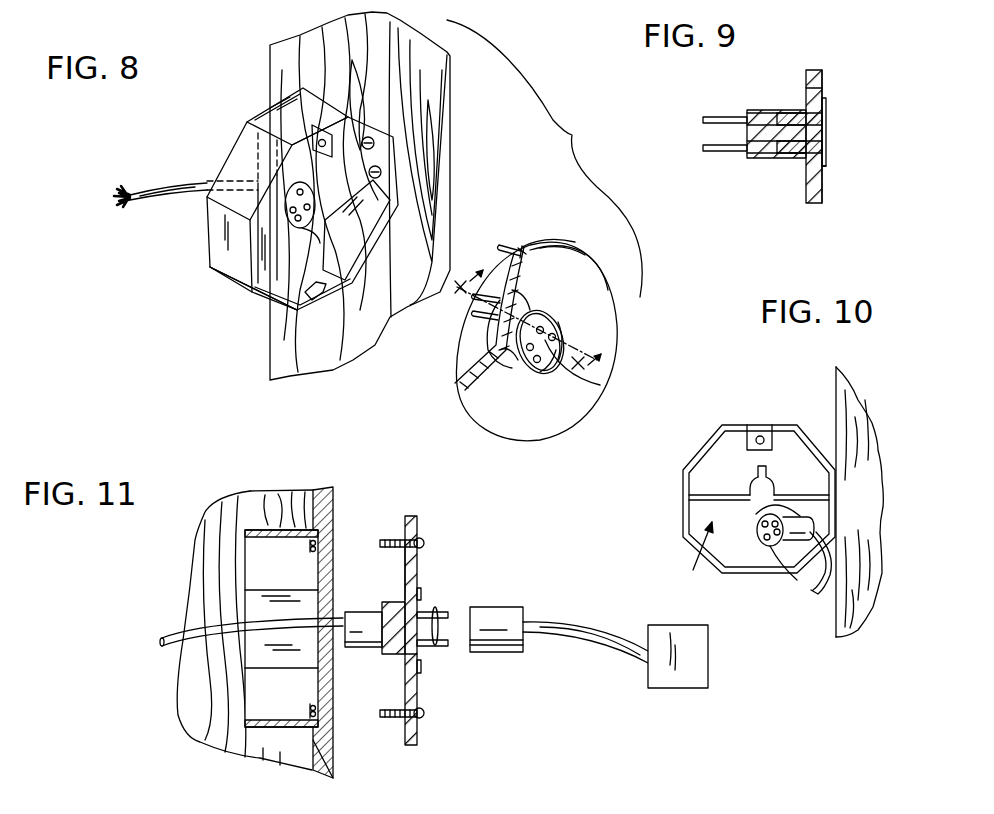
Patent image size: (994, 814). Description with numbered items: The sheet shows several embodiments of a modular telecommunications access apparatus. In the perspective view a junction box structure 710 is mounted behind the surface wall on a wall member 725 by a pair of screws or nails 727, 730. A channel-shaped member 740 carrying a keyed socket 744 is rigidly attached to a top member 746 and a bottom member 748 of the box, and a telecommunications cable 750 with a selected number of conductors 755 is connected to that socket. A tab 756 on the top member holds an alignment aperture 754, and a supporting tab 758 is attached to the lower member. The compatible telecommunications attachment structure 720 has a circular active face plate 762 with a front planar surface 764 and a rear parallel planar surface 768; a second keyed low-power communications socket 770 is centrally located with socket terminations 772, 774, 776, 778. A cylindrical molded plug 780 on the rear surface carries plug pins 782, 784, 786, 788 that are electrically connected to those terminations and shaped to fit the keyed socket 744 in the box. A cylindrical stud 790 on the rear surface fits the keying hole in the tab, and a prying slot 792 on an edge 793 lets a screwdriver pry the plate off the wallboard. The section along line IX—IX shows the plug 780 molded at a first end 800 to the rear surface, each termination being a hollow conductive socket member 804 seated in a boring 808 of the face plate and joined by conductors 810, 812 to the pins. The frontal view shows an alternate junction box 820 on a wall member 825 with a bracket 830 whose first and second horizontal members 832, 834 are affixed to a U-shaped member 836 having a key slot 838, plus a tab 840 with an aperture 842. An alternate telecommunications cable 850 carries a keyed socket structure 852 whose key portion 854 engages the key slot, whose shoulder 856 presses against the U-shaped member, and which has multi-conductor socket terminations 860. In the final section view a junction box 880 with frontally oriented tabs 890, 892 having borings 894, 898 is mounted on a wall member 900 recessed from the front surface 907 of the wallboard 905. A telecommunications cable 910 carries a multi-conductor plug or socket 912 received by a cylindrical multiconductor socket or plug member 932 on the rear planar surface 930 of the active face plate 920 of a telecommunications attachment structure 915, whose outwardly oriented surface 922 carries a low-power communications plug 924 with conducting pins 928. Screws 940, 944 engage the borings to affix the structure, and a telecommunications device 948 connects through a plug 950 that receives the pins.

In FIG. 8, the junction box structure 710 is at (215, 222).
In FIG. 8, the telecommunications attachment structure 720 is at (531, 311).
In FIG. 8, the wall member 725 is at (442, 90).
In FIG. 8, the screw or nail 727 is at (375, 144).
In FIG. 8, the screw or nail 730 is at (381, 173).
In FIG. 8, the channel-shaped member 740 is at (283, 282).
In FIG. 8, the keyed socket 744 is at (322, 252).
In FIG. 8, the top member 746 is at (265, 112).
In FIG. 8, the bottom member 748 is at (300, 305).
In FIG. 8, the telecommunications cable 750 is at (190, 186).
In FIG. 8, the alignment aperture 754 is at (315, 118).
In FIG. 8, the conductors 755 is at (131, 190).
In FIG. 8, the tab 756 is at (316, 140).
In FIG. 8, the supporting tab 758 is at (335, 286).
In FIG. 8, the circular active face plate 762 is at (590, 413).
In FIG. 9, the circular active face plate 762 is at (812, 72).
In FIG. 8, the front planar surface 764 is at (588, 270).
In FIG. 9, the front planar surface 764 is at (824, 85).
In FIG. 8, the rear parallel planar surface 768 is at (547, 244).
In FIG. 9, the rear parallel planar surface 768 is at (808, 88).
In FIG. 8, the second keyed low-power communications socket 770 is at (554, 352).
In FIG. 9, the second keyed low-power communications socket 770 is at (827, 130).
In FIG. 8, the socket termination 772 is at (562, 342).
In FIG. 9, the socket termination 772 is at (826, 147).
In FIG. 8, the socket termination 774 is at (550, 326).
In FIG. 9, the socket termination 774 is at (825, 117).
In FIG. 8, the socket termination 776 is at (529, 352).
In FIG. 8, the socket termination 778 is at (588, 385).
In FIG. 8, the cylindrical molded plug 780 is at (486, 368).
In FIG. 9, the cylindrical molded plug 780 is at (756, 110).
In FIG. 8, the plug pin 782 is at (512, 293).
In FIG. 9, the plug pin 782 is at (707, 151).
In FIG. 8, the plug pin 784 is at (518, 314).
In FIG. 9, the plug pin 784 is at (705, 119).
In FIG. 8, the plug pin 786 is at (478, 305).
In FIG. 8, the plug pin 788 is at (470, 335).
In FIG. 8, the cylindrical stud 790 is at (505, 246).
In FIG. 8, the prying slot 792 is at (522, 246).
In FIG. 8, the edge 793 is at (558, 243).
In FIG. 9, the first end 800 is at (800, 160).
In FIG. 9, the hollow conductive socket member 804 is at (795, 154).
In FIG. 9, the boring 808 is at (830, 168).
In FIG. 9, the conductor 810 is at (760, 112).
In FIG. 9, the conductor 812 is at (765, 155).
In FIG. 10, the alternate junction box 820 is at (708, 438).
In FIG. 10, the wall member 825 is at (845, 375).
In FIG. 10, the bracket 830 is at (685, 551).
In FIG. 10, the first horizontal member 832 is at (713, 495).
In FIG. 10, the second horizontal member 834 is at (812, 493).
In FIG. 10, the U-shaped member 836 is at (750, 487).
In FIG. 10, the key slot 838 is at (767, 468).
In FIG. 10, the tab 840 is at (749, 447).
In FIG. 10, the aperture 842 is at (762, 436).
In FIG. 10, the telecommunications cable 850 is at (820, 588).
In FIG. 10, the keyed socket structure 852 is at (802, 527).
In FIG. 10, the key portion 854 is at (762, 507).
In FIG. 10, the shoulder 856 is at (773, 542).
In FIG. 10, the multi-conductor socket terminations 860 is at (777, 535).
In FIG. 11, the junction box 880 is at (253, 557).
In FIG. 11, the tab 890 is at (312, 541).
In FIG. 11, the tab 892 is at (314, 705).
In FIG. 11, the boring 894 is at (310, 557).
In FIG. 11, the boring 898 is at (308, 715).
In FIG. 11, the wall member 900 is at (293, 490).
In FIG. 11, the wallboard 905 is at (334, 487).
In FIG. 11, the front surface 907 is at (333, 775).
In FIG. 11, the telecommunications cable 910 is at (172, 632).
In FIG. 11, the multi-conductor plug or socket 912 is at (364, 614).
In FIG. 11, the telecommunications attachment structure 915 is at (426, 621).
In FIG. 11, the active face plate 920 is at (416, 576).
In FIG. 11, the outwardly oriented surface 922 is at (421, 590).
In FIG. 11, the low-power communications plug 924 is at (421, 660).
In FIG. 11, the conducting pins 928 is at (432, 648).
In FIG. 11, the rear planar surface 930 is at (405, 553).
In FIG. 11, the cylindrical multiconductor socket or plug member 932 is at (397, 656).
In FIG. 11, the screw 940 is at (392, 539).
In FIG. 11, the screw 944 is at (392, 720).
In FIG. 11, the telecommunications device 948 is at (667, 673).
In FIG. 11, the plug 950 is at (508, 617).